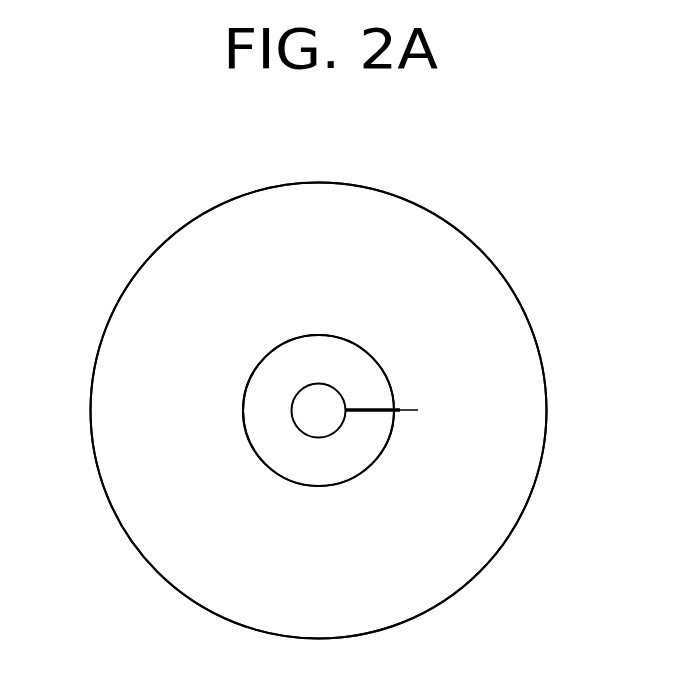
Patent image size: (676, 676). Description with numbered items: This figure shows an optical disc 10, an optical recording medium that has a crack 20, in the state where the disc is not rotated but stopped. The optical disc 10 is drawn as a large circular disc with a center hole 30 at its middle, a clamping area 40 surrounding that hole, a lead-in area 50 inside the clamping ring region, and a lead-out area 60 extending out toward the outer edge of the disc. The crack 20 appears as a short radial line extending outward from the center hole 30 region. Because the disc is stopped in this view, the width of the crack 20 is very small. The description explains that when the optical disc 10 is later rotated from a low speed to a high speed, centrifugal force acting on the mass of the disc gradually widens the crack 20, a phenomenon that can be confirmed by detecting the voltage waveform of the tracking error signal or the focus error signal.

The optical disc 10 is at (492, 252).
The crack 20 is at (373, 408).
The center hole 30 is at (310, 407).
The clamping area 40 is at (263, 418).
The lead-in area 50 is at (240, 445).
The lead-out area 60 is at (152, 532).